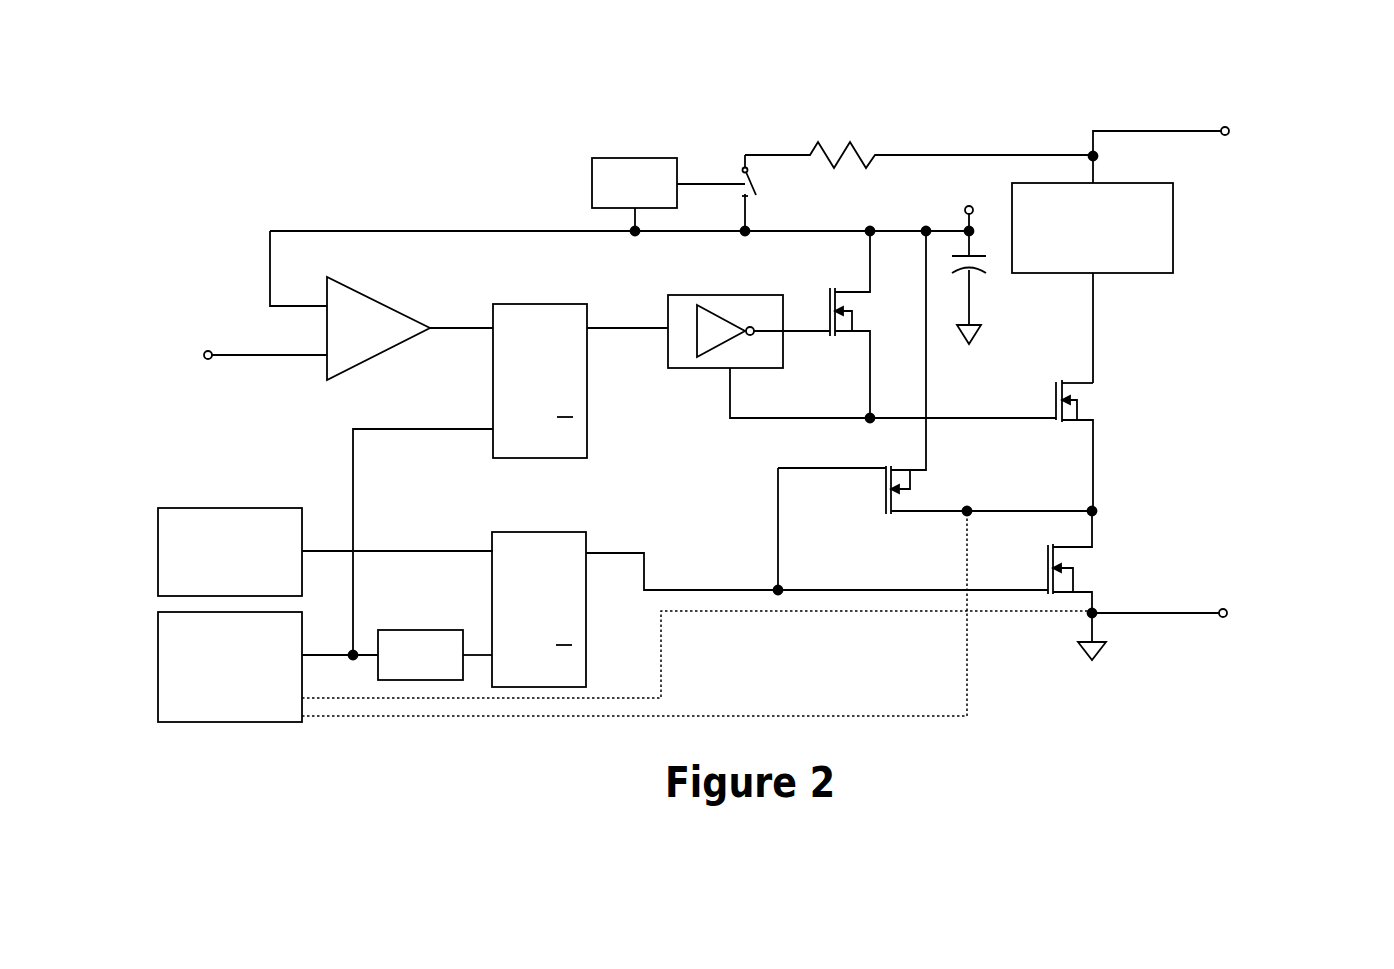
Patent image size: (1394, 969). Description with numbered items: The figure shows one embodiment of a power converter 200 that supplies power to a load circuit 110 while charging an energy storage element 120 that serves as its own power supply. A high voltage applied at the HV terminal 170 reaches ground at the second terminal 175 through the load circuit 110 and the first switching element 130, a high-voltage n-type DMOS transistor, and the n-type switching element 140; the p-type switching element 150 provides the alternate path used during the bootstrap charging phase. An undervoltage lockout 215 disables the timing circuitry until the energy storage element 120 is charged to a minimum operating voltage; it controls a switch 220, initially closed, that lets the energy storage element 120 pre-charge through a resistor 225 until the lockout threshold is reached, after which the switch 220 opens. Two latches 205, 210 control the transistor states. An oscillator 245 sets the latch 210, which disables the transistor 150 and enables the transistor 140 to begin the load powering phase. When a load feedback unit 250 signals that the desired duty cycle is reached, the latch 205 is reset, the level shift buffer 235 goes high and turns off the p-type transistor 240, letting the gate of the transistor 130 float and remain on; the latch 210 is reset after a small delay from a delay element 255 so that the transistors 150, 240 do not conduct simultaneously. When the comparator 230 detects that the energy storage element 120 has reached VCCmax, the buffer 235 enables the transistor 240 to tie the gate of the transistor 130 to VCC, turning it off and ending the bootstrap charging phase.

The power converter 200 is at (282, 113).
The load circuit 110 is at (1076, 255).
The energy storage element 120 is at (986, 270).
The first switching element 130 is at (1054, 403).
The switching element 140 is at (1047, 549).
The switching element 150 is at (884, 500).
The high voltage (HV) terminal 170 is at (1227, 124).
The second terminal 175 is at (1225, 606).
The latch 205 is at (531, 303).
The latch 210 is at (545, 531).
The undervoltage lockout (UVLO) 215 is at (637, 158).
The switch 220 is at (740, 170).
The resistor 225 is at (838, 142).
The comparator 230 is at (367, 296).
The level shift buffer 235 is at (714, 294).
The p-type enhancement mode transistor 240 is at (826, 298).
The oscillator 245 is at (248, 507).
The load feedback unit 250 is at (229, 723).
The delay element 255 is at (425, 629).